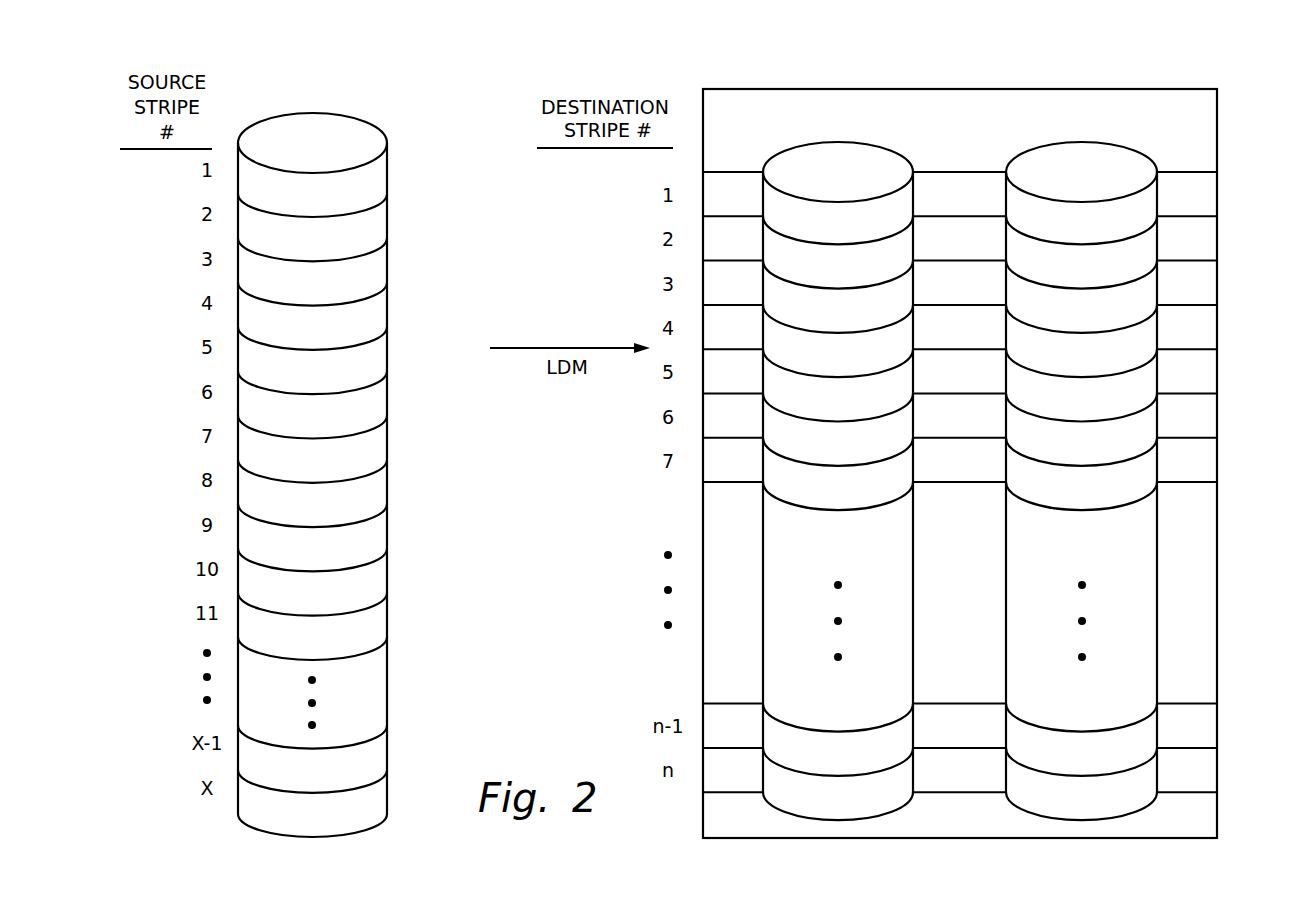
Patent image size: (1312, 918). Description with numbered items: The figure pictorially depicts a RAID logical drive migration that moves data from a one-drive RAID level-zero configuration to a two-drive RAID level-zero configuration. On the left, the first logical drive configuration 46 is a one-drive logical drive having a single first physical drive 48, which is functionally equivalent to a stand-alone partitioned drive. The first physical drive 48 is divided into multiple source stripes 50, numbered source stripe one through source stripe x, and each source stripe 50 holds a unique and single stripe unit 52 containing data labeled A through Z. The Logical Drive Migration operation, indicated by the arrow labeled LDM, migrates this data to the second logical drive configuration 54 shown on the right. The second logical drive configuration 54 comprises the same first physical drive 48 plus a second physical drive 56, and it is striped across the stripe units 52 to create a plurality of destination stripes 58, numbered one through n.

The first logical drive configuration 46 is at (372, 110).
The first physical drive 48 is at (396, 126).
The source stripe 50 is at (401, 172).
The stripe unit 52 is at (401, 262).
The second logical drive configuration 54 is at (1232, 107).
The second physical drive 56 is at (1146, 139).
The destination stripe 58 is at (1230, 193).